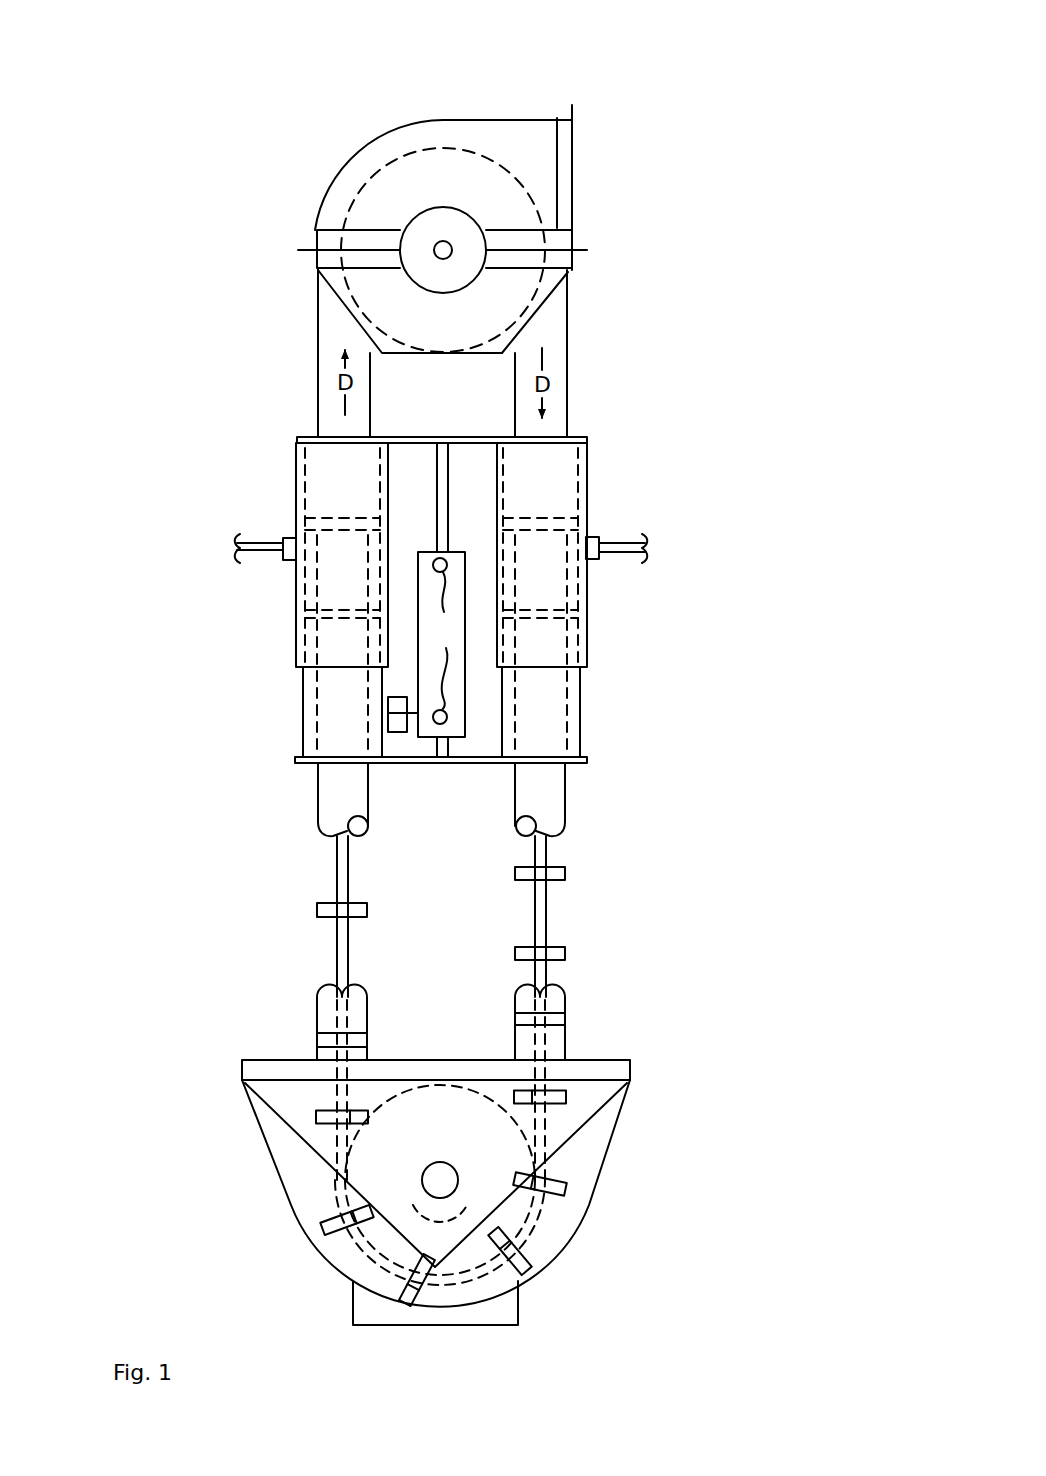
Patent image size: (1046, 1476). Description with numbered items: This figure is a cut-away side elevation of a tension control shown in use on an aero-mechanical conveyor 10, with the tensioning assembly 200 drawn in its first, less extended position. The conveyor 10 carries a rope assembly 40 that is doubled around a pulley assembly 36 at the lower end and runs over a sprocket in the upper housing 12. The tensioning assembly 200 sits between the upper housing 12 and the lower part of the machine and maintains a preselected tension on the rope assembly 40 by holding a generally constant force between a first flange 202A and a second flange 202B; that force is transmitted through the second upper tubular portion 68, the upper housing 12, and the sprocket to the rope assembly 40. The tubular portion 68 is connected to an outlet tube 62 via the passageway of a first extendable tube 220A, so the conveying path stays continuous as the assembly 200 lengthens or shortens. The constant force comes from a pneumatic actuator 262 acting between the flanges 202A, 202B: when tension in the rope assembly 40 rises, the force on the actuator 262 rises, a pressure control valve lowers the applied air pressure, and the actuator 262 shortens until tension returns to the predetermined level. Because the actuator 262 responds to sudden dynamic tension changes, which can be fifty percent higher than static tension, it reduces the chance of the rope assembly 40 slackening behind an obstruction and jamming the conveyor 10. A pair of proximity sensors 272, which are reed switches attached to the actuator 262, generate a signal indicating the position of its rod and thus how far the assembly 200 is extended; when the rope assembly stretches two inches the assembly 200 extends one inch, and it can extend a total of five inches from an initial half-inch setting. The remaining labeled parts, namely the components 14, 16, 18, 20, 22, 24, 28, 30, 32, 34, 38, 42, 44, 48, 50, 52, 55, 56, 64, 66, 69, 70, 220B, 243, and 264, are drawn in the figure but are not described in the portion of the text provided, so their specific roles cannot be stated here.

The conveyor 10 is at (782, 127).
The upper housing 12 is at (308, 152).
The hopper assembly 14 is at (250, 1213).
The support rod assembly 16 is at (643, 803).
The chute section 18 is at (290, 826).
The housing top wall 20 is at (457, 115).
The chute wall 22 is at (348, 313).
The housing side wall 24 is at (582, 250).
The housing end wall 28 is at (575, 152).
The deflector 30 is at (297, 1123).
The chute side wall 32 is at (565, 285).
The drive shaft 34 is at (443, 240).
The pulley assembly 36 is at (335, 1270).
The shaft 38 is at (460, 1182).
The rope assembly 40 is at (567, 847).
The collar 42 is at (567, 872).
The outlet 44 is at (495, 1327).
The collar 48 is at (570, 1005).
The yoke 50 is at (570, 1043).
The support leg 52 is at (565, 780).
The leg 55 is at (587, 432).
The bearing band 56 is at (317, 272).
The outlet tube 62 is at (317, 1003).
The yoke plate 64 is at (318, 1053).
The bottom plate 66 is at (318, 766).
The second upper tubular portion 68 is at (317, 348).
The leg 69 is at (317, 430).
The leg 70 is at (567, 303).
The tensioning assembly 200 is at (205, 640).
The first flange 202A is at (587, 440).
The second flange 202B is at (587, 753).
The first extendable tube 220A is at (295, 488).
The second cylinder 220B is at (615, 600).
The bracket 243 is at (300, 518).
The pneumatic actuator 262 is at (466, 718).
The stop block 264 is at (405, 734).
The proximity sensors 272 is at (441, 600).